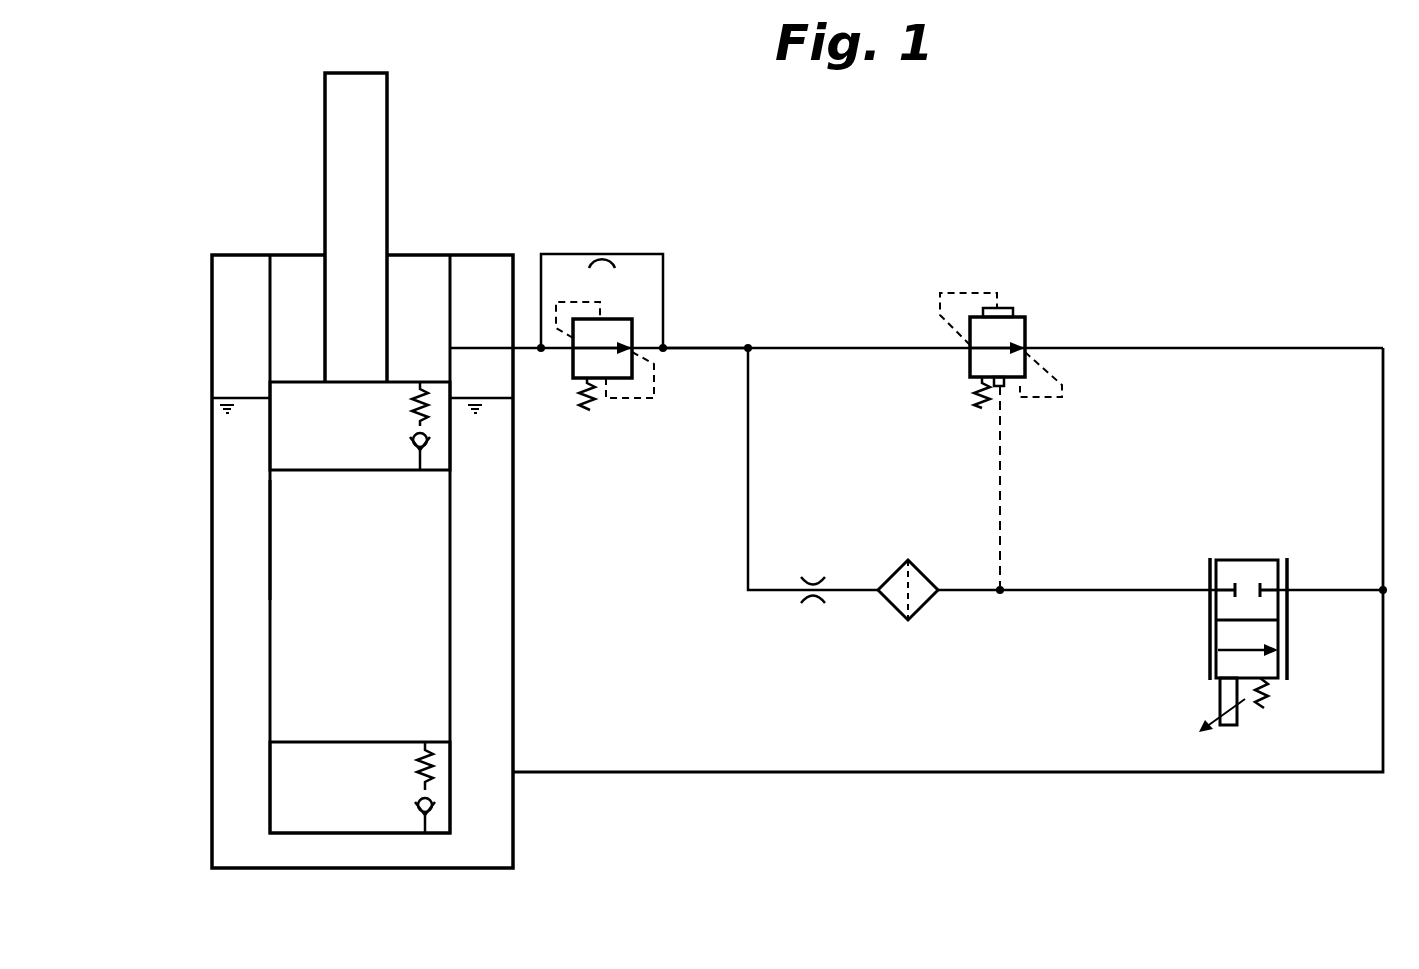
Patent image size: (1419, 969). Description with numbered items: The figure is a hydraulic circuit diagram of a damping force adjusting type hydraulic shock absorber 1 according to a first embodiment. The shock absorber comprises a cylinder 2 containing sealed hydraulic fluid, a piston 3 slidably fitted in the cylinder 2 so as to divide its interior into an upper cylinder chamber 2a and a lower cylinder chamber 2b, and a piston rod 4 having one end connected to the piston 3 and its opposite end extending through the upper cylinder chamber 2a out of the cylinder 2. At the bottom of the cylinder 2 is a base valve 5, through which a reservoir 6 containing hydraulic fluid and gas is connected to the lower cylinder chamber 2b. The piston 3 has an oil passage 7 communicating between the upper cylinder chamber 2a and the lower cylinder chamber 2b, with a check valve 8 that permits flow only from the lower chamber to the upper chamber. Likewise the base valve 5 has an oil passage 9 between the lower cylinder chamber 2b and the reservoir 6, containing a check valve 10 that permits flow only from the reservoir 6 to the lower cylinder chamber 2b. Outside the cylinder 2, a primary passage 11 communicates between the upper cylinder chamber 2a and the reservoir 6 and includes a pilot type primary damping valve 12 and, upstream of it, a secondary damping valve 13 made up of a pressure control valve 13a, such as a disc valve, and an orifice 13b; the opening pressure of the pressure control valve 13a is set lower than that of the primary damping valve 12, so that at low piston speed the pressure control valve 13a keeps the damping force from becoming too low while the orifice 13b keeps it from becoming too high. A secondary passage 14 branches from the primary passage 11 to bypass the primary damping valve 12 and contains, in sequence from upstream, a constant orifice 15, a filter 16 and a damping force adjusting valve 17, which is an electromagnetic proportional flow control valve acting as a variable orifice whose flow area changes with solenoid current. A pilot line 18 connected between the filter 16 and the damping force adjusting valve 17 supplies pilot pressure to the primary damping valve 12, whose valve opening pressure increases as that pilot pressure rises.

The damping force adjusting type hydraulic shock absorber 1 is at (921, 162).
The cylinder 2 is at (267, 295).
The upper cylinder chamber 2a is at (283, 352).
The lower cylinder chamber 2b is at (283, 628).
The piston 3 is at (283, 445).
The piston rod 4 is at (378, 110).
The base valve 5 is at (283, 793).
The reservoir 6 is at (225, 538).
The oil passage 7 is at (430, 460).
The check valve 8 is at (430, 432).
The oil passage 9 is at (434, 822).
The check valve 10 is at (434, 794).
The primary passage 11 is at (1230, 346).
The primary damping valve 12 is at (1030, 320).
The secondary damping valve 13 is at (603, 197).
The pressure control valve 13a is at (583, 398).
The orifice 13b is at (594, 241).
The secondary passage 14 is at (1118, 594).
The constant orifice 15 is at (808, 598).
The filter 16 is at (898, 614).
The damping force adjusting valve 17 is at (1290, 650).
The pilot line 18 is at (1003, 495).